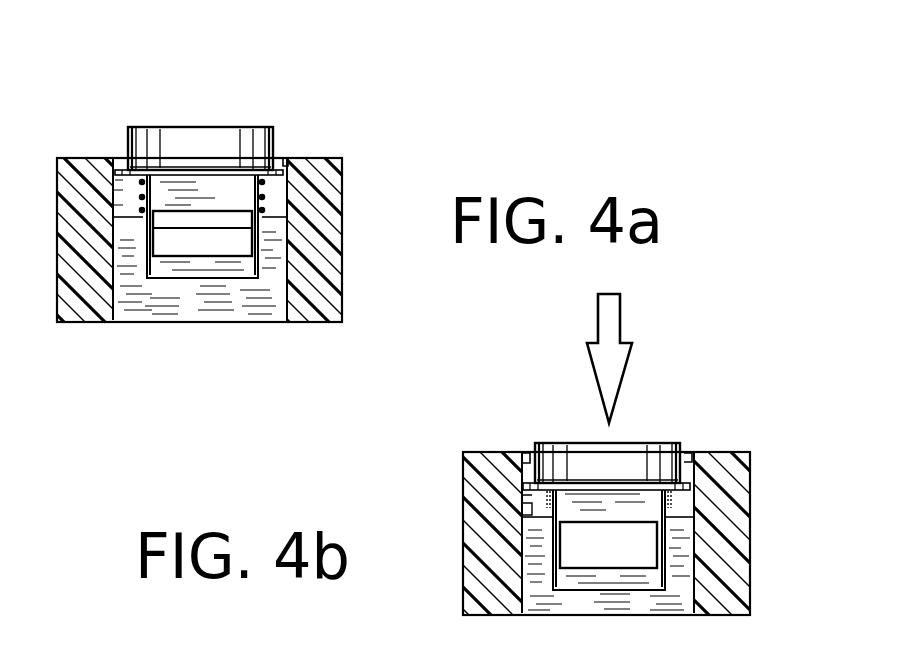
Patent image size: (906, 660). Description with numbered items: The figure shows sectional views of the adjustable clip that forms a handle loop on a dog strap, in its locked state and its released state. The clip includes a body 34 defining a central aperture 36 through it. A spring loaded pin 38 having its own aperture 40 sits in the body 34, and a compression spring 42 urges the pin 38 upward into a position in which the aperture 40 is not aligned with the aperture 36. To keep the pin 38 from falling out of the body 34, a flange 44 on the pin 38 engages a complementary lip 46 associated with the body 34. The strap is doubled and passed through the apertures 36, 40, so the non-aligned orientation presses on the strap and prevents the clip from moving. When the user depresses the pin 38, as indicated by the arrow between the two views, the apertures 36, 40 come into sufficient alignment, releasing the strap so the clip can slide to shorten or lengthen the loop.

In FIG. 4a, the body 34 is at (342, 218).
In FIG. 4b, the body 34 is at (750, 528).
In FIG. 4a, the central aperture 36 is at (233, 243).
In FIG. 4a, the spring loaded pin 38 is at (243, 138).
In FIG. 4b, the spring loaded pin 38 is at (663, 443).
In FIG. 4a, the aperture 40 is at (262, 200).
In FIG. 4b, the aperture 40 is at (637, 525).
In FIG. 4a, the compression spring 42 is at (141, 198).
In FIG. 4b, the compression spring 42 is at (548, 500).
In FIG. 4a, the flange 44 is at (210, 165).
In FIG. 4b, the flange 44 is at (588, 473).
In FIG. 4a, the lip 46 is at (283, 157).
In FIG. 4b, the lip 46 is at (525, 462).